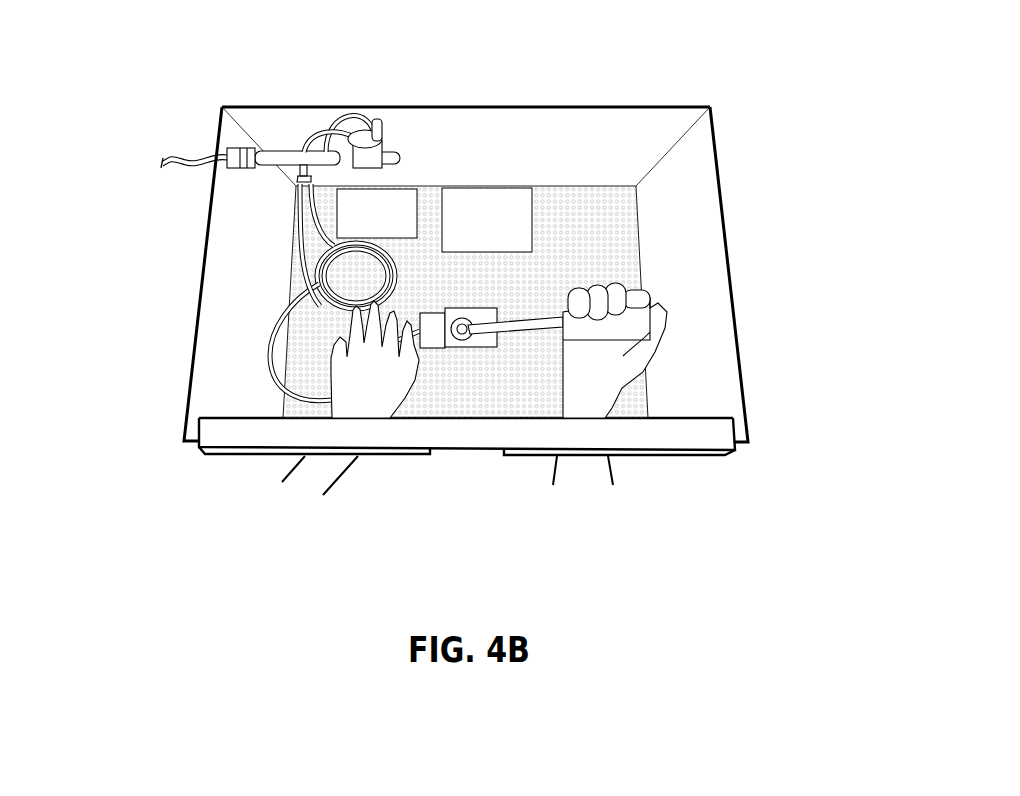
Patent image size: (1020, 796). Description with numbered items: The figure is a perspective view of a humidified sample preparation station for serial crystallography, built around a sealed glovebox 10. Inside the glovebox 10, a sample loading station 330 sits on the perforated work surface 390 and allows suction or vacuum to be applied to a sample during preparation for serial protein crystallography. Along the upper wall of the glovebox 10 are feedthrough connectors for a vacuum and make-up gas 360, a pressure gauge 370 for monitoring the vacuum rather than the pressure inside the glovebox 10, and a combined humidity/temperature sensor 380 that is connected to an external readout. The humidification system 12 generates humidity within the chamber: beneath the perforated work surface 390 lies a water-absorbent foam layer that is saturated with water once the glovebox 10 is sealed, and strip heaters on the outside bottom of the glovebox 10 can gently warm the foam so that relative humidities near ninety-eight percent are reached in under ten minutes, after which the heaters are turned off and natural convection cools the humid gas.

The glovebox 10 is at (160, 48).
The humidification system 12 is at (550, 543).
The sample loading station 330 is at (457, 336).
The feedthrough connectors for a vacuum and make-up gas 360 is at (295, 169).
The pressure gauge 370 is at (375, 138).
The combined humidity/temperature sensor 380 is at (287, 156).
The perforated work surface 390 is at (622, 223).